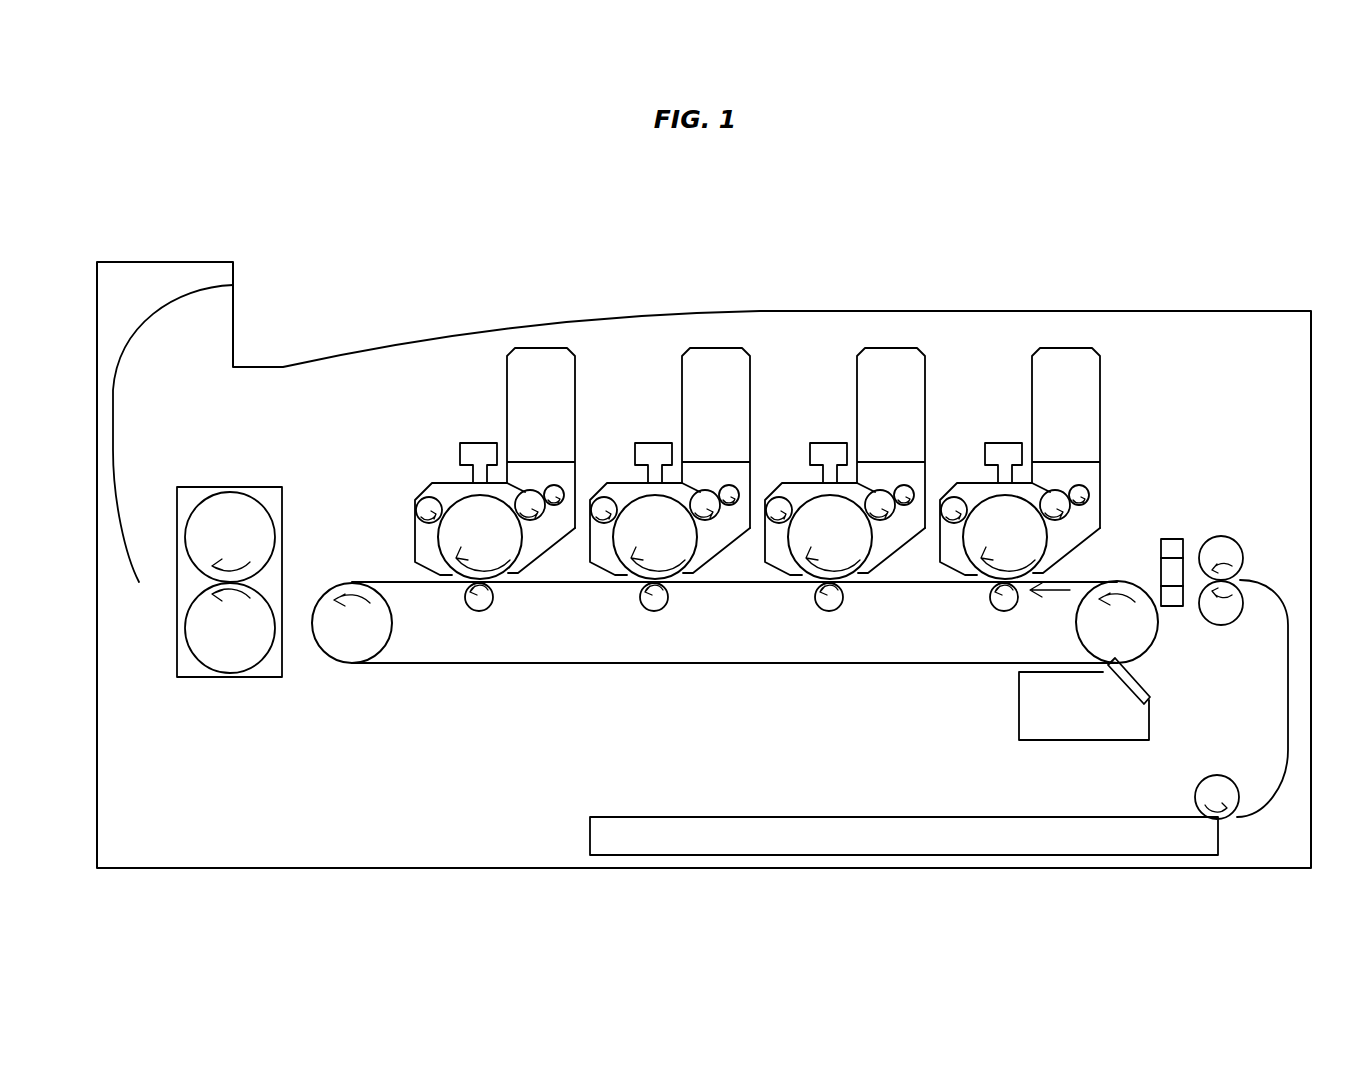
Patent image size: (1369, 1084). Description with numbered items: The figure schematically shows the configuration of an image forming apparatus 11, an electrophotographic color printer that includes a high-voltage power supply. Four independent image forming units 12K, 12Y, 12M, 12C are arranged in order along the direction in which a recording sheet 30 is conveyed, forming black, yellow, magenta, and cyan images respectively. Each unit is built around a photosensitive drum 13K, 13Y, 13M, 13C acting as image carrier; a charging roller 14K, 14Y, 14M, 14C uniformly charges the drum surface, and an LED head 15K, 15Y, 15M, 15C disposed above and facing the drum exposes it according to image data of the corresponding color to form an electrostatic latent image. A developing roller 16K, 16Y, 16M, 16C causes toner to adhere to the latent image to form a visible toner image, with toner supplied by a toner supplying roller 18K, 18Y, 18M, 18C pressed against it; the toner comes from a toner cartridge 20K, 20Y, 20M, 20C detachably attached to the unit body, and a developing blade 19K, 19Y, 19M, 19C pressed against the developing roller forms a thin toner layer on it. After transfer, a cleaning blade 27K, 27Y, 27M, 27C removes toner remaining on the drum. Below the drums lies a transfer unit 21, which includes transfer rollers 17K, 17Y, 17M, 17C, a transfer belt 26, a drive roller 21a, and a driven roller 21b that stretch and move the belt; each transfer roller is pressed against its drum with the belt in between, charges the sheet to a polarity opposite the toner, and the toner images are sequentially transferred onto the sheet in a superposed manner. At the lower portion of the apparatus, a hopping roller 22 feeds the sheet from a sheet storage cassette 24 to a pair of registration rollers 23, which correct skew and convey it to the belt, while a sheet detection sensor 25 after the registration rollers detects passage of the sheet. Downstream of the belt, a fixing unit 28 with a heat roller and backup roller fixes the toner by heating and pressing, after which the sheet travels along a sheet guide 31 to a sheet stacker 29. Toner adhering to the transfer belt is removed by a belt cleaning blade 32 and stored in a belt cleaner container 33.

The image forming apparatus 11 is at (1178, 262).
The image forming unit 12C is at (509, 489).
The image forming unit 12M is at (683, 489).
The image forming unit 12Y is at (858, 489).
The image forming unit 12K is at (1036, 489).
The photosensitive drum 13C is at (418, 539).
The photosensitive drum 13M is at (593, 539).
The photosensitive drum 13Y is at (768, 539).
The photosensitive drum 13K is at (943, 539).
The charging roller 14C is at (424, 497).
The charging roller 14M is at (603, 521).
The charging roller 14Y is at (778, 521).
The charging roller 14K is at (954, 521).
The LED head 15C is at (483, 443).
The LED head 15M is at (658, 443).
The LED head 15Y is at (833, 443).
The LED head 15K is at (1008, 443).
The developing roller 16C is at (538, 517).
The developing roller 16M is at (713, 517).
The developing roller 16Y is at (888, 517).
The developing roller 16K is at (1060, 492).
The transfer roller 17C is at (479, 611).
The transfer roller 17M is at (654, 612).
The transfer roller 17Y is at (831, 612).
The transfer roller 17K is at (1010, 610).
The toner supplying roller 18C is at (558, 487).
The toner supplying roller 18M is at (733, 487).
The toner supplying roller 18Y is at (908, 487).
The toner supplying roller 18K is at (1083, 492).
The developing blade 19C is at (530, 490).
The developing blade 19M is at (705, 490).
The developing blade 19Y is at (880, 490).
The developing blade 19K is at (1055, 490).
The toner cartridge 20C is at (573, 382).
The toner cartridge 20M is at (748, 382).
The toner cartridge 20Y is at (923, 382).
The toner cartridge 20K is at (1098, 382).
The transfer unit 21 is at (772, 669).
The drive roller 21a is at (335, 662).
The driven roller 21b is at (1140, 633).
The hopping roller 22 is at (1195, 785).
The pair of registration rollers 23 is at (1240, 522).
The sheet storage cassette 24 is at (590, 832).
The sheet detection sensor 25 is at (1170, 538).
The transfer belt 26 is at (408, 580).
The cleaning blade 27C is at (418, 556).
The cleaning blade 27M is at (597, 548).
The cleaning blade 27Y is at (772, 548).
The cleaning blade 27K is at (943, 545).
The fixing unit 28 is at (266, 488).
The sheet stacker 29 is at (309, 330).
The recording sheet 30 is at (1290, 660).
The sheet guide 31 is at (110, 402).
The belt cleaning blade 32 is at (1140, 688).
The belt cleaner container 33 is at (1040, 742).